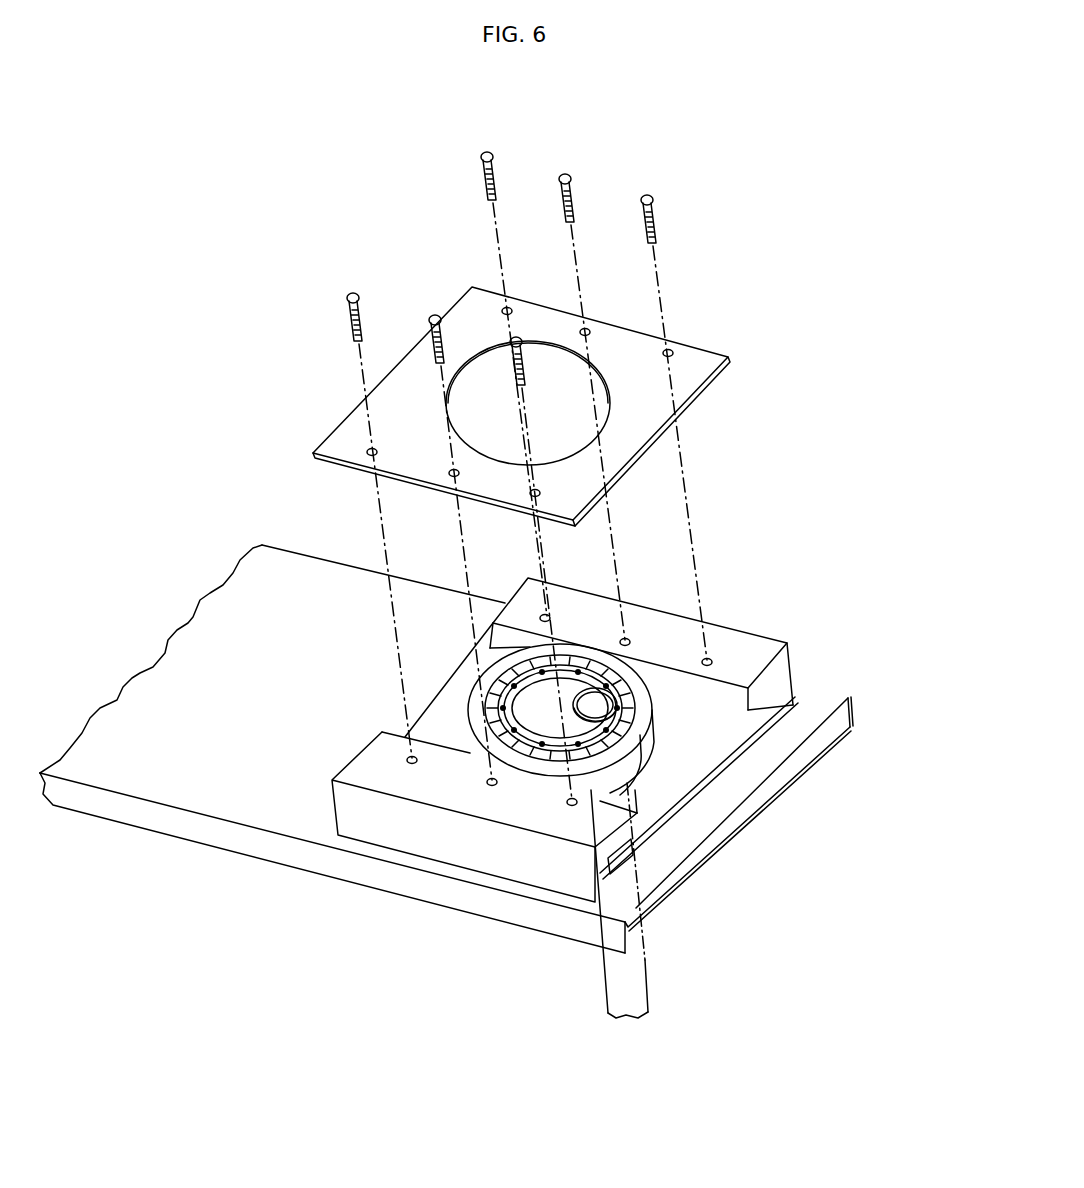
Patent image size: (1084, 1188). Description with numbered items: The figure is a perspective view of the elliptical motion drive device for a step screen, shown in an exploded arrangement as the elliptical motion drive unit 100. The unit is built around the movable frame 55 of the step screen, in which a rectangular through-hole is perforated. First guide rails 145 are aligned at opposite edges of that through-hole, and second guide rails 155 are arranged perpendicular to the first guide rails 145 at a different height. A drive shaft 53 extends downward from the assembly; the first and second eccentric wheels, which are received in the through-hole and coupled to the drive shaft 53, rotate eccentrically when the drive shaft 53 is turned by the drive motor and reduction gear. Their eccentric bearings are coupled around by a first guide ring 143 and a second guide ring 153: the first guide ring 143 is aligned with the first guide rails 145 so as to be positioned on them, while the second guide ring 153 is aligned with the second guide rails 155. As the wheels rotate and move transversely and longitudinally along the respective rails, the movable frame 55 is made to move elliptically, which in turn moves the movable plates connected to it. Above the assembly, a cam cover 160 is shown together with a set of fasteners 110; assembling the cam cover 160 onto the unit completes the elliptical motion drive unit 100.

The drive shaft 53 is at (632, 981).
The movable frame 55 is at (760, 755).
The elliptical motion drive unit 100 is at (358, 703).
The screws 110 is at (657, 230).
The first guide ring 143 is at (748, 710).
The first guide rails 145 is at (443, 712).
The second guide ring 153 is at (652, 722).
The second guide rails 155 is at (493, 623).
The cam cover 160 is at (652, 423).